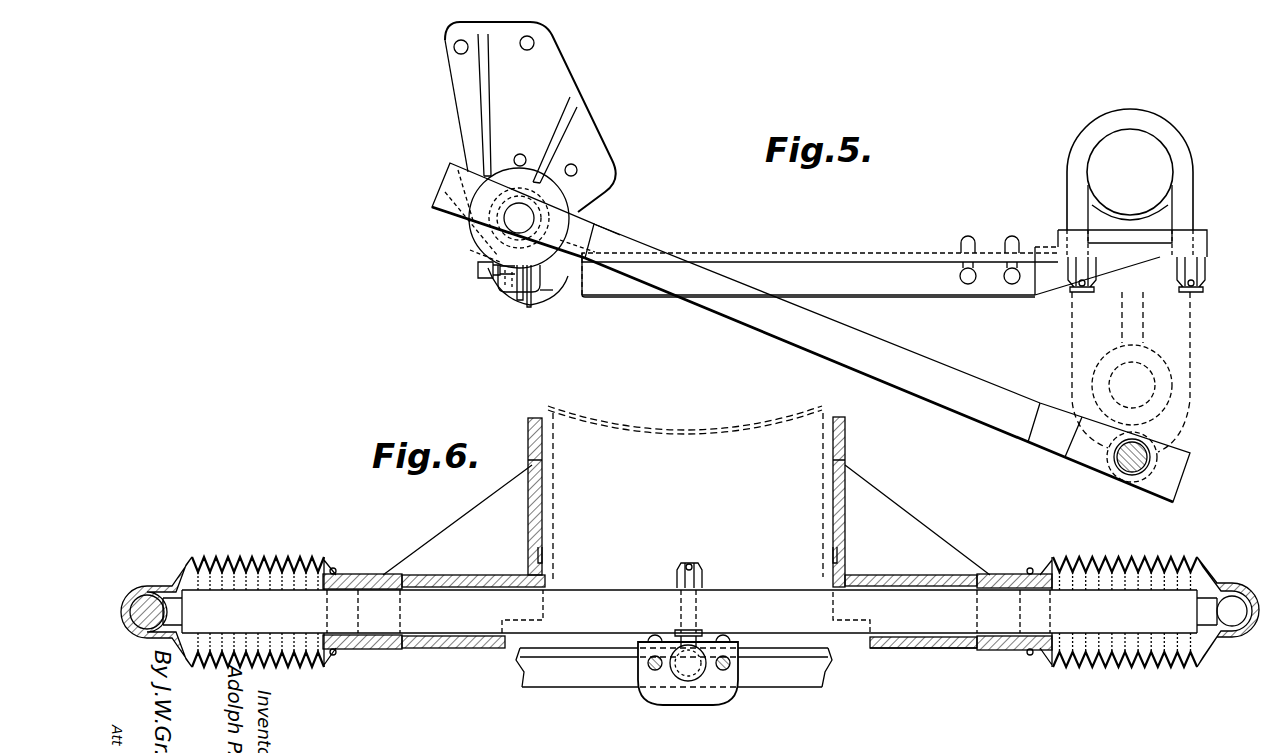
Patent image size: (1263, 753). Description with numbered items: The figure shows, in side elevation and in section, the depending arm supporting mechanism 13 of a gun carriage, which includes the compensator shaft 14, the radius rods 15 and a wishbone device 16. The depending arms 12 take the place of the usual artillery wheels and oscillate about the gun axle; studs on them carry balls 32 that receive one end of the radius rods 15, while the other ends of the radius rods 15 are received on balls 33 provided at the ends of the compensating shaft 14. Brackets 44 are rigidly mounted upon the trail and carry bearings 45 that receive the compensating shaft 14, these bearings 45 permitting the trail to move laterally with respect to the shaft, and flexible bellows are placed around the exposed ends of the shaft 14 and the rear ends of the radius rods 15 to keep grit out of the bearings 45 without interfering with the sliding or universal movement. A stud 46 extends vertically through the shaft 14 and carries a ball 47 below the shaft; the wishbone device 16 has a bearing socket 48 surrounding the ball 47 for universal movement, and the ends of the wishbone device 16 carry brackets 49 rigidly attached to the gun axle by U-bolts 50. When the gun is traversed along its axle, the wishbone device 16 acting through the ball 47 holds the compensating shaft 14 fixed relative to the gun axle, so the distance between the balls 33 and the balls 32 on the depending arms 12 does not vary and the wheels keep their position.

In FIG. 5, the depending arms 12 is at (1188, 378).
In FIG. 5, the depending arm supporting mechanism 13 is at (601, 223).
In FIG. 6, the depending arm supporting mechanism 13 is at (914, 660).
In FIG. 6, the compensator shaft 14 is at (586, 600).
In FIG. 5, the radius rods 15 is at (933, 392).
In FIG. 6, the radius rods 15 is at (143, 588).
In FIG. 5, the wishbone device 16 is at (832, 268).
In FIG. 6, the wishbone device 16 is at (792, 680).
In FIG. 5, the balls 32 is at (512, 224).
In FIG. 6, the balls 33 is at (150, 604).
In FIG. 5, the brackets 44 is at (582, 118).
In FIG. 6, the brackets 44 is at (846, 465).
In FIG. 5, the bearings 45 is at (462, 210).
In FIG. 6, the bearings 45 is at (452, 648).
In FIG. 6, the stud 46 is at (690, 562).
In FIG. 5, the ball 47 is at (506, 290).
In FIG. 6, the ball 47 is at (686, 668).
In FIG. 5, the bearing socket 48 is at (542, 292).
In FIG. 6, the bearing socket 48 is at (718, 698).
In FIG. 5, the brackets 49 is at (1038, 245).
In FIG. 5, the U-bolts 50 is at (1085, 142).